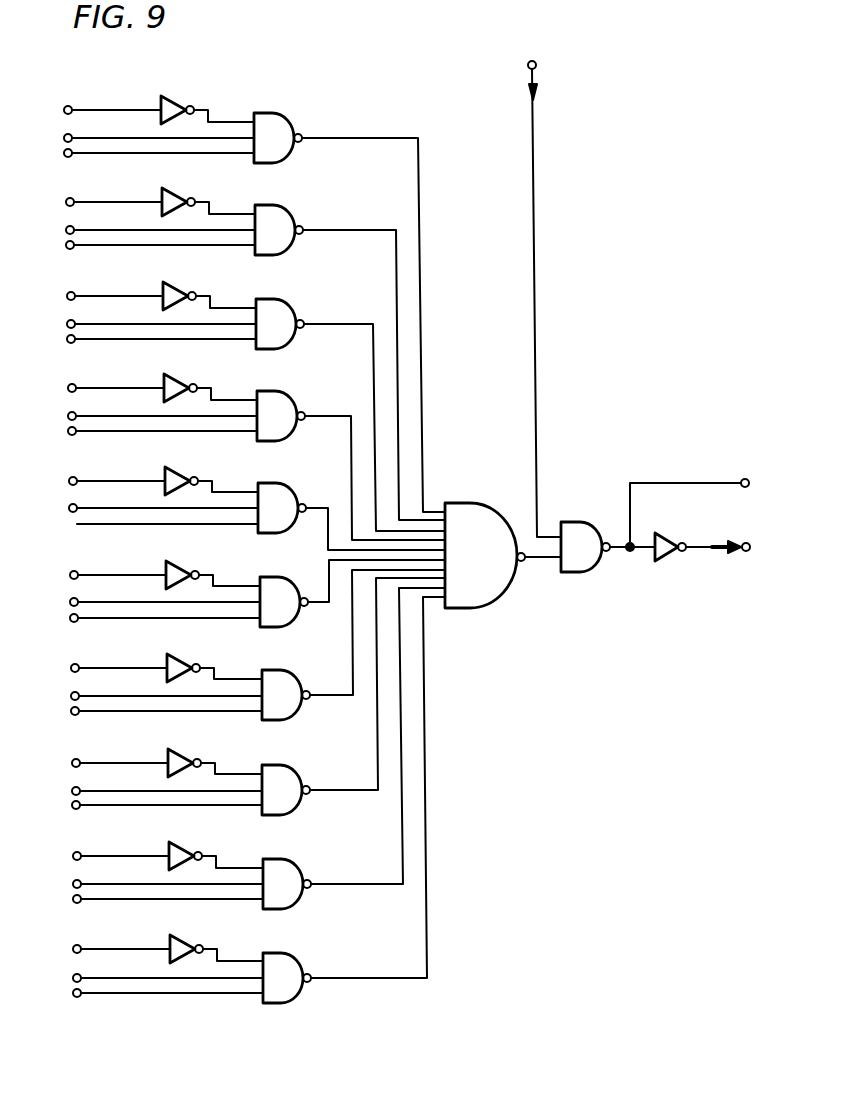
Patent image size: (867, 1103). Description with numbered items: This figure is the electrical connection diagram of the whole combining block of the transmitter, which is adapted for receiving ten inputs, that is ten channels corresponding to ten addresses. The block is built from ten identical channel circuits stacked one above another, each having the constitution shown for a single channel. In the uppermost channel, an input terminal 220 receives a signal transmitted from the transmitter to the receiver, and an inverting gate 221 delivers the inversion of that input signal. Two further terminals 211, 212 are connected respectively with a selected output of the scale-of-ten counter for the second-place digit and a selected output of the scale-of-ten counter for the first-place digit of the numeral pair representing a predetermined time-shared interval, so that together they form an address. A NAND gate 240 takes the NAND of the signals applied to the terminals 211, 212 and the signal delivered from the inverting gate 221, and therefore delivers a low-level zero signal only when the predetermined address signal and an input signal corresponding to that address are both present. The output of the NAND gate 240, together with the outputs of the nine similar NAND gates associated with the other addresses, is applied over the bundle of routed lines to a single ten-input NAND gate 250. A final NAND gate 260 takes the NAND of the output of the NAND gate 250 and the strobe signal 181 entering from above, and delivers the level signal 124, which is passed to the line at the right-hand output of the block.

The input terminal 220 is at (65, 107).
The inverting gate 221 is at (180, 96).
The NAND gate 240 is at (297, 107).
The terminal 211 is at (65, 135).
The terminal 212 is at (66, 156).
The strobe signal 181 is at (561, 299).
The NAND gate 250 is at (505, 501).
The NAND gate 260 is at (598, 512).
The level signal 124 is at (754, 482).